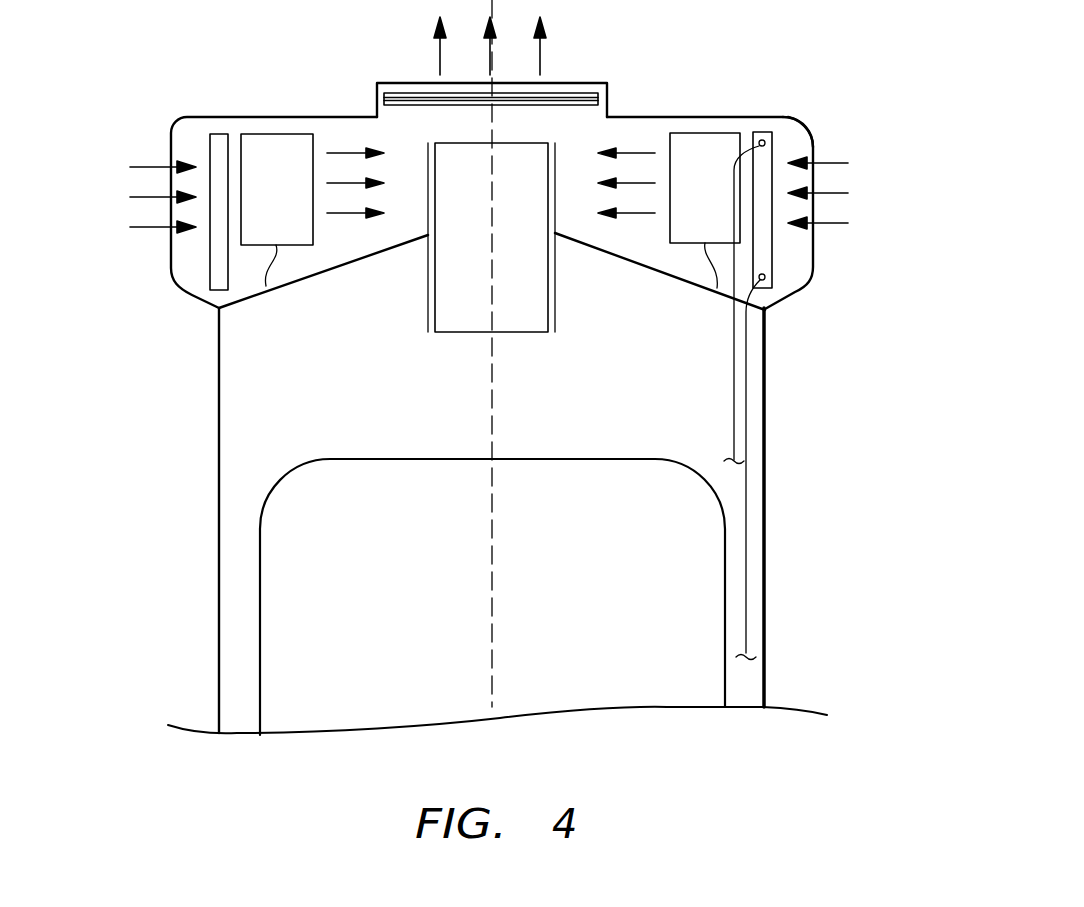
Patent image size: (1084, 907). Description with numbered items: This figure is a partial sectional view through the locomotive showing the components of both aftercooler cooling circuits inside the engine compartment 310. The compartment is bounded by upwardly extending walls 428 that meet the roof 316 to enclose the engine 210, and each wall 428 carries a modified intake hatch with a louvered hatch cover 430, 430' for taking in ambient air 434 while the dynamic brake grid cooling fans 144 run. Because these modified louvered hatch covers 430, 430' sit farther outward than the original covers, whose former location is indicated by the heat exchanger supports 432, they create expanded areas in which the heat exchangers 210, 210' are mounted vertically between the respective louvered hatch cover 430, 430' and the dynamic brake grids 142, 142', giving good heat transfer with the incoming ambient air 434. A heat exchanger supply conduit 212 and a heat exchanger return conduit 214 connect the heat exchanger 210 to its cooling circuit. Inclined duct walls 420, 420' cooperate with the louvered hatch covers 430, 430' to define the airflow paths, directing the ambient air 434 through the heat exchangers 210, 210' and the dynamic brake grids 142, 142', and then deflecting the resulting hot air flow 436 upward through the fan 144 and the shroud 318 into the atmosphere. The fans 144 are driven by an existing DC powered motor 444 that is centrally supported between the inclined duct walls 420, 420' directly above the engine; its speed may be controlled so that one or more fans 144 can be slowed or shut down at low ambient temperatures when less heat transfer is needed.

The engine compartment 310 is at (165, 463).
The dynamic brake grid cooling fan 144 is at (578, 83).
The roof 316 is at (643, 115).
The shroud 318 is at (388, 82).
The hot air flow 436 is at (540, 58).
The louvered hatch cover 430' is at (144, 164).
The louvered hatch cover 430 is at (842, 137).
The ambient air 434 is at (848, 163).
The heat exchanger 210' is at (256, 181).
The dynamic brake grid 142' is at (277, 210).
The dynamic brake grid 142 is at (705, 210).
The DC powered motor 444 is at (543, 251).
The inclined duct wall 420' is at (323, 279).
The inclined duct wall 420 is at (660, 279).
The heat exchanger support 432 is at (762, 132).
The heat exchanger 210 is at (544, 433).
The heat exchanger return conduit 214 is at (733, 367).
The heat exchanger supply conduit 212 is at (748, 600).
The wall 428 is at (767, 467).